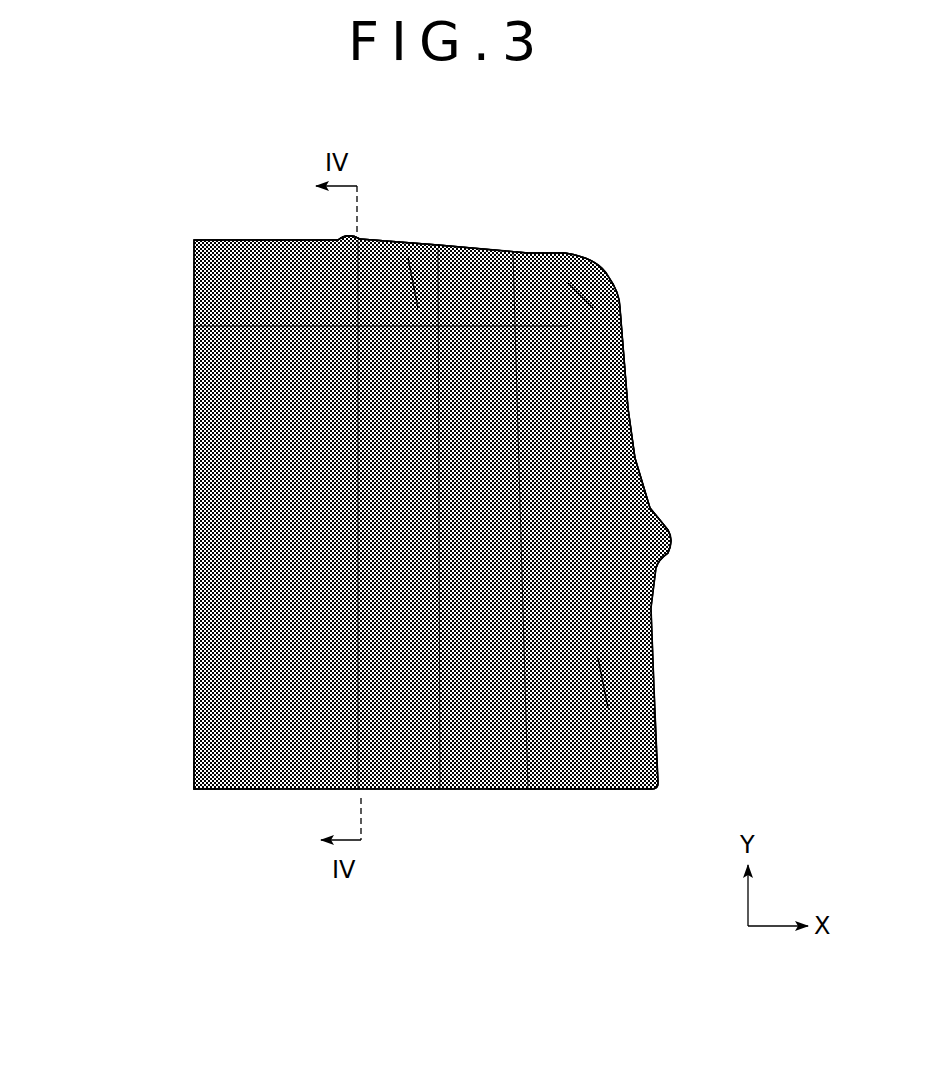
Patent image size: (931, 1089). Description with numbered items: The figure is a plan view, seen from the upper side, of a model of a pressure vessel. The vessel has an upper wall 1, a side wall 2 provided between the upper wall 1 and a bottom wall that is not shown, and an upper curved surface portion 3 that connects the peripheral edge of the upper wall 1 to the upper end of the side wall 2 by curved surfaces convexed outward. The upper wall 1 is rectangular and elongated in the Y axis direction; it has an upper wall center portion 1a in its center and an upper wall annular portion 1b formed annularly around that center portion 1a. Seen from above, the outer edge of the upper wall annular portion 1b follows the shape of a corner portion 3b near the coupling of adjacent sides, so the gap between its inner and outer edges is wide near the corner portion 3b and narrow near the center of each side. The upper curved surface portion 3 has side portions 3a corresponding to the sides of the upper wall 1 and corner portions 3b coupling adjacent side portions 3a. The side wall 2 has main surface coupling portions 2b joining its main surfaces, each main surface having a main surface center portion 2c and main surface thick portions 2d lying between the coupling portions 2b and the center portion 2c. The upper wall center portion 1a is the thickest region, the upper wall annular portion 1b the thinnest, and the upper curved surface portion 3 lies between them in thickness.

The upper wall 1 is at (186, 600).
The upper wall center portion 1a is at (206, 738).
The upper wall annular portion 1b is at (538, 781).
The side wall 2 is at (621, 386).
The main surface coupling portion 2b is at (598, 258).
The main surface center portion 2c is at (650, 773).
The main surface thick portion 2d is at (350, 230).
The upper curved surface portion 3 is at (186, 280).
The side portion 3a is at (410, 275).
The corner portion 3b is at (572, 293).